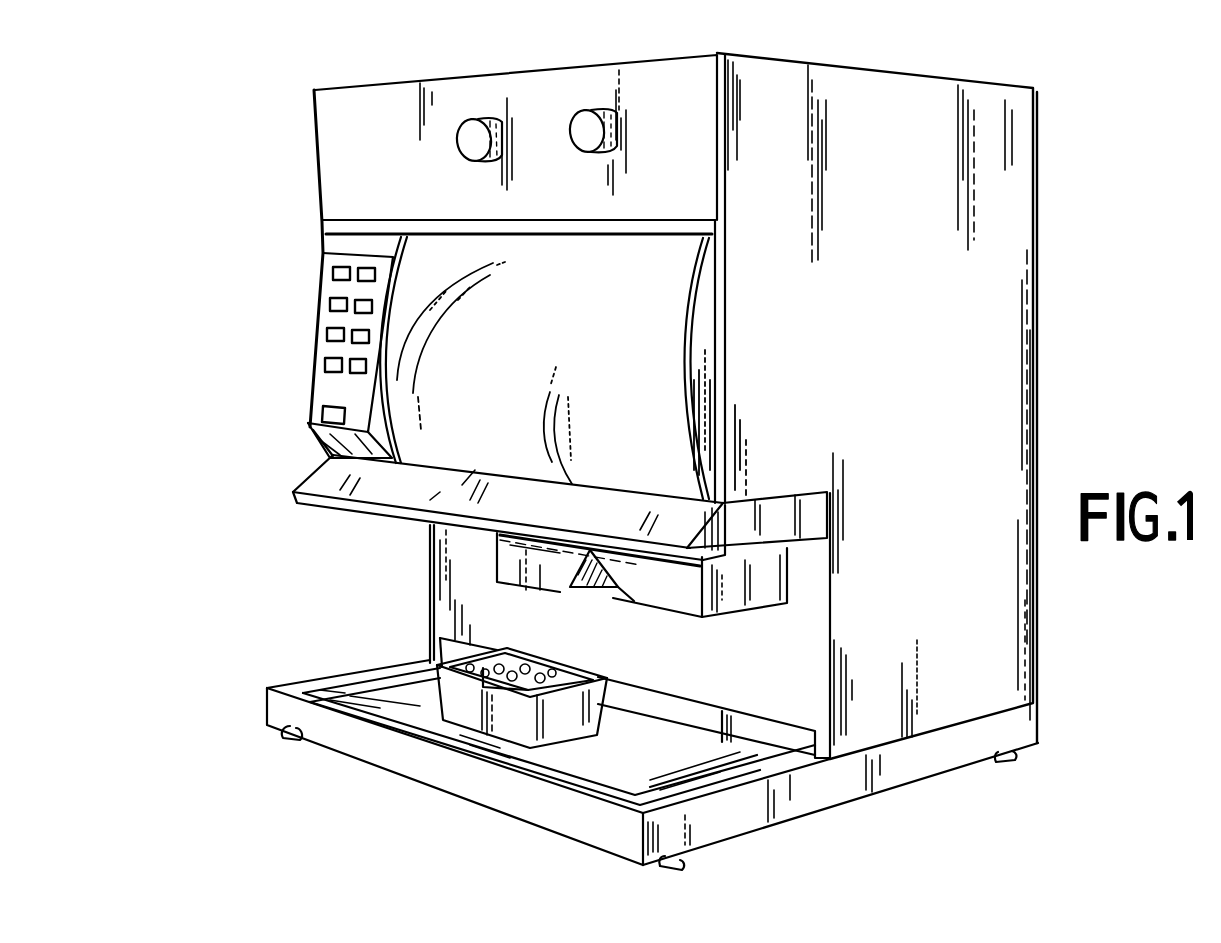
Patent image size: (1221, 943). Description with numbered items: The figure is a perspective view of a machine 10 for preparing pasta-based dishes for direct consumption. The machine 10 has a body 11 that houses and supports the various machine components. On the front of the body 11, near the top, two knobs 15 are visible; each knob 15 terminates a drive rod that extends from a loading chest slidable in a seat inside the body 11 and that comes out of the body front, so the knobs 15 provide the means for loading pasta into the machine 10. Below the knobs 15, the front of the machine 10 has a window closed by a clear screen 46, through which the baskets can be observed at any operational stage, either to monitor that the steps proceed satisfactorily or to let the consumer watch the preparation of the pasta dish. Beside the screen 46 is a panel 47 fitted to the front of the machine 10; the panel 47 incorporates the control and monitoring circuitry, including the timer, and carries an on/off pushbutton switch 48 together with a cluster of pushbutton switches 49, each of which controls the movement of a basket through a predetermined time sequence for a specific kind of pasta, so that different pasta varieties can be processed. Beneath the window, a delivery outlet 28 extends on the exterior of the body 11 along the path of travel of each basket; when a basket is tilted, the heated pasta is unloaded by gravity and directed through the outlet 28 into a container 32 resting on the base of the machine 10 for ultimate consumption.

The machine 10 is at (266, 216).
The body 11 is at (998, 198).
The knob 15 is at (465, 133).
The delivery outlet 28 is at (553, 572).
The container 32 is at (460, 688).
The clear screen 46 is at (626, 334).
The panel 47 is at (322, 383).
The on/off pushbutton switch 48 is at (327, 412).
The cluster of pushbutton switches 49 is at (357, 337).